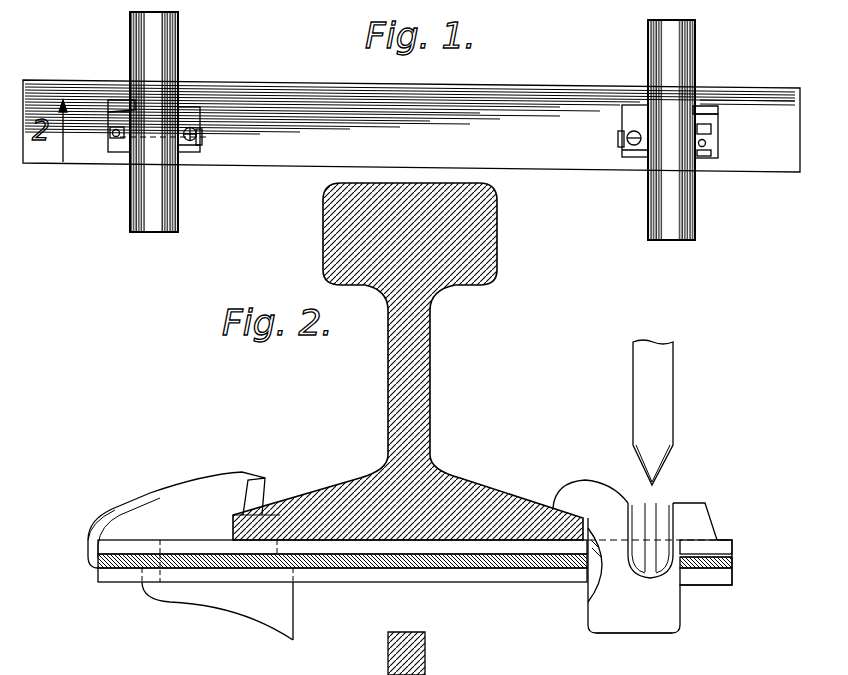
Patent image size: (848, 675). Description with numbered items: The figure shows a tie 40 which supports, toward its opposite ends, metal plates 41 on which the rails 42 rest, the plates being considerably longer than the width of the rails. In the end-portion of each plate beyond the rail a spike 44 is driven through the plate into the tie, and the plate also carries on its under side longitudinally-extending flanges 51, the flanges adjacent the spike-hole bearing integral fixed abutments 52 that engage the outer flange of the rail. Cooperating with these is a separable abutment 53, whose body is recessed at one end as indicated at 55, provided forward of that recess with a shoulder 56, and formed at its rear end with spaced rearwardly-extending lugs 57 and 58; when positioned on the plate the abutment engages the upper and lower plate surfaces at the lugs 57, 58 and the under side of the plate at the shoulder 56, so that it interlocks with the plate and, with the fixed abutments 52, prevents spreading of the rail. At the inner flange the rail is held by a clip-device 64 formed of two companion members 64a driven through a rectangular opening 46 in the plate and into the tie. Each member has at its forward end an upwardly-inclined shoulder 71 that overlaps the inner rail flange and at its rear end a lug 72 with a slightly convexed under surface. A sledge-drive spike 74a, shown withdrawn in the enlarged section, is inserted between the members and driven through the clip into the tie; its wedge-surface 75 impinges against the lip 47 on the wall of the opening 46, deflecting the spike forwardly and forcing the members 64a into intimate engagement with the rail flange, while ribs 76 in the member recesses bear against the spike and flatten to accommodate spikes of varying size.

In FIG. 1, the tie 40 is at (411, 126).
In FIG. 1, the plate 41 is at (195, 115).
In FIG. 2, the plate 41 is at (497, 566).
In FIG. 1, the rail 42 is at (160, 70).
In FIG. 2, the rail 42 is at (392, 410).
In FIG. 1, the spike 44 is at (115, 135).
In FIG. 2, the opening 46 is at (585, 580).
In FIG. 2, the lip 47 is at (688, 550).
In FIG. 2, the flange 51 is at (384, 582).
In FIG. 1, the fixed abutment 52 is at (125, 143).
In FIG. 1, the separable abutment 53 is at (120, 107).
In FIG. 2, the separable abutment 53 is at (176, 520).
In FIG. 2, the recess 55 is at (251, 478).
In FIG. 2, the shoulder 56 is at (287, 558).
In FIG. 2, the lug 57 is at (108, 528).
In FIG. 2, the lug 58 is at (158, 573).
In FIG. 1, the clip-device 64 is at (181, 143).
In FIG. 2, the clip-device 64 is at (660, 575).
In FIG. 2, the companion member 64a is at (632, 613).
In FIG. 2, the shoulder 71 is at (565, 493).
In FIG. 2, the lug 72 is at (693, 522).
In FIG. 1, the spike 74a is at (203, 137).
In FIG. 2, the spike 74a is at (660, 395).
In FIG. 2, the wedge-surface 75 is at (655, 470).
In FIG. 2, the rib 76 is at (657, 512).